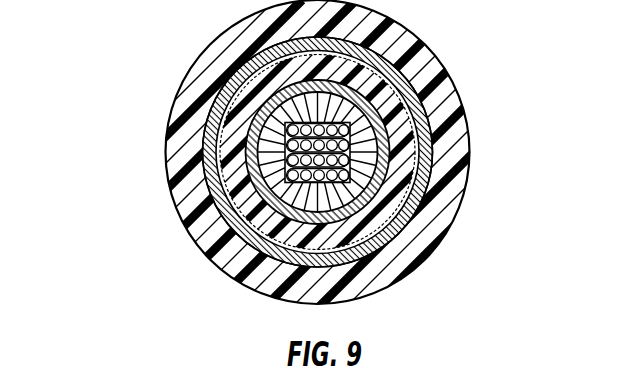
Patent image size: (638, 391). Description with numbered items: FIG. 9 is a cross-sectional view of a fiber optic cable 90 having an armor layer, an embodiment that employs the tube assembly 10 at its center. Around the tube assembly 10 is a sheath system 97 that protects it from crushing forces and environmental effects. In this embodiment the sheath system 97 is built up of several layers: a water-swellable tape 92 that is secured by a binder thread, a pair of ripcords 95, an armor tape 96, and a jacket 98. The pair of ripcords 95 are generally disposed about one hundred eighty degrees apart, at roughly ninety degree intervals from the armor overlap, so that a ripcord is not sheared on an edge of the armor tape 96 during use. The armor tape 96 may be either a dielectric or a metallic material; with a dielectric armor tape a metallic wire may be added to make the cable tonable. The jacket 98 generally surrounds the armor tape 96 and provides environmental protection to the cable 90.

The cable 90 is at (124, 64).
The tube assembly 10 is at (307, 152).
The water-swellable tape 92 is at (410, 197).
The ripcords 95 is at (198, 191).
The armor tape 96 is at (198, 235).
The sheath system 97 is at (203, 140).
The jacket 98 is at (435, 227).